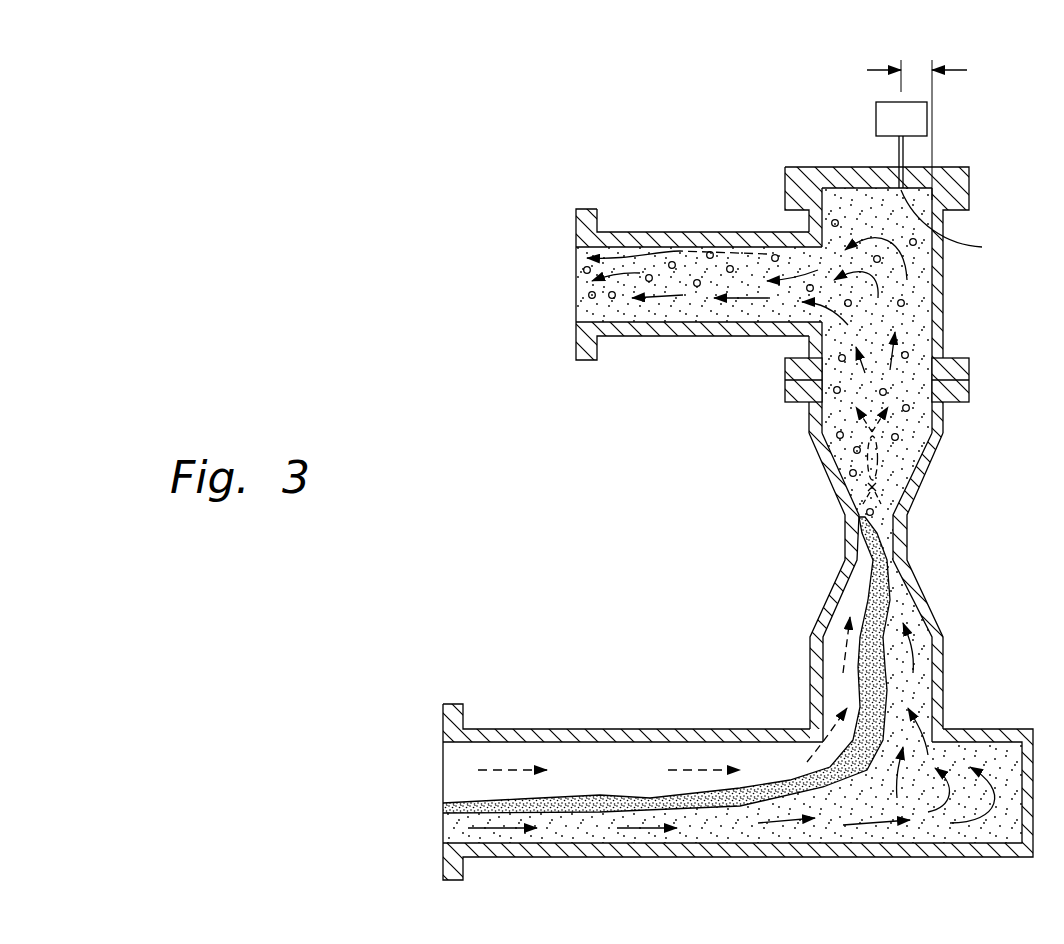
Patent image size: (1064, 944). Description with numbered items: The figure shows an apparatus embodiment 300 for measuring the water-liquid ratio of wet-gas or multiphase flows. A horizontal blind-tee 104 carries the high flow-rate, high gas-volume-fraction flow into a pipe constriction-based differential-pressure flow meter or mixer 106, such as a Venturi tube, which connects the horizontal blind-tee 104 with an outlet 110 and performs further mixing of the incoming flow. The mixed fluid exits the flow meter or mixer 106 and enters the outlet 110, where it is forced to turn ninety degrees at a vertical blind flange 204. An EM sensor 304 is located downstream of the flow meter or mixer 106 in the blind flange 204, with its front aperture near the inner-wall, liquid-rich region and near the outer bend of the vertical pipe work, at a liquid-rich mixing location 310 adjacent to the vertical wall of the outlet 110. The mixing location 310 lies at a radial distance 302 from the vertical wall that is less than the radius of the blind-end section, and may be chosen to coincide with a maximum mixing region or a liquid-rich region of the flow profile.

The apparatus embodiment 300 is at (556, 132).
The horizontal blind-tee 104 is at (598, 729).
The differential-pressure flow meter 106 is at (826, 607).
The outlet 110 is at (663, 232).
The blind flange 204 is at (840, 167).
The radial distance 302 is at (915, 68).
The EM sensor 304 is at (876, 114).
The liquid-rich mixing location 310 is at (982, 247).